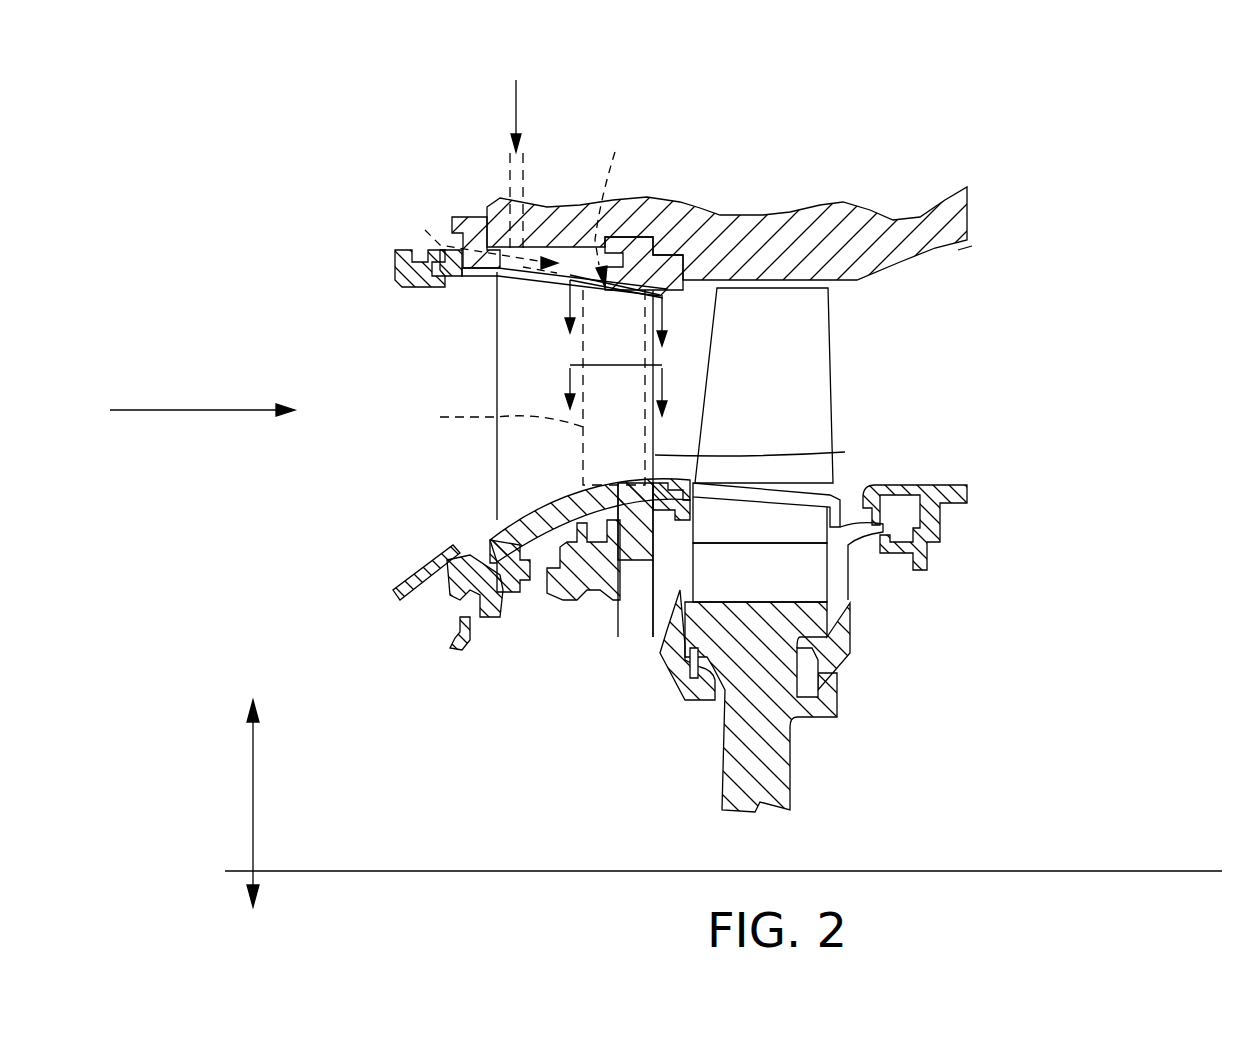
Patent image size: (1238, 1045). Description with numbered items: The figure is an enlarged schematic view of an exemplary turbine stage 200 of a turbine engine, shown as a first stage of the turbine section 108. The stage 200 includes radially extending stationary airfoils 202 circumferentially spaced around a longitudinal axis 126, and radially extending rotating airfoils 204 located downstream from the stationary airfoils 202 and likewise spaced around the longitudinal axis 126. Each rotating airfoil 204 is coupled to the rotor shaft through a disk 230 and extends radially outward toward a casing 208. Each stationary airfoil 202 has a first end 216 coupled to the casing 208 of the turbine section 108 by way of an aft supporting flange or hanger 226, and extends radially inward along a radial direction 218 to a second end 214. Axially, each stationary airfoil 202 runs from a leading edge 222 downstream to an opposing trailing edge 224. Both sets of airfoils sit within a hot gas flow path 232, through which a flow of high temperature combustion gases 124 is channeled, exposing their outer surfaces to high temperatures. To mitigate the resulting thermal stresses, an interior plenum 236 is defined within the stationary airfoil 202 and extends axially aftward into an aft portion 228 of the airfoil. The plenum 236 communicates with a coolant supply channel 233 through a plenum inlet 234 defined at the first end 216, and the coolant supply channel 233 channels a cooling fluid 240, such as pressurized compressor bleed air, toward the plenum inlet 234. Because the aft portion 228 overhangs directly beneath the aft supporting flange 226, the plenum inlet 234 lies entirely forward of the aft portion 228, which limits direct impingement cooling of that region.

The turbine section 108 is at (874, 90).
The turbine stage 200 is at (736, 108).
The hot gas flow path 232 is at (865, 285).
The aft supporting flange 226 is at (670, 237).
The casing 208 is at (490, 205).
The first end 216 is at (490, 284).
The coolant supply channel 233 is at (425, 230).
The plenum inlet 234 is at (617, 204).
The cooling fluid 240 is at (516, 95).
The stationary airfoil 202 is at (497, 465).
The leading edge 222 is at (497, 375).
The plenum 236 is at (485, 416).
The second end 214 is at (483, 527).
The aft portion 228 is at (653, 637).
The rotating airfoil 204 is at (832, 372).
The trailing edge 224 is at (777, 484).
The disk 230 is at (795, 760).
The longitudinal axis 126 is at (1015, 871).
The high temperature combustion gases 124 is at (165, 410).
The radial direction 218 is at (253, 782).